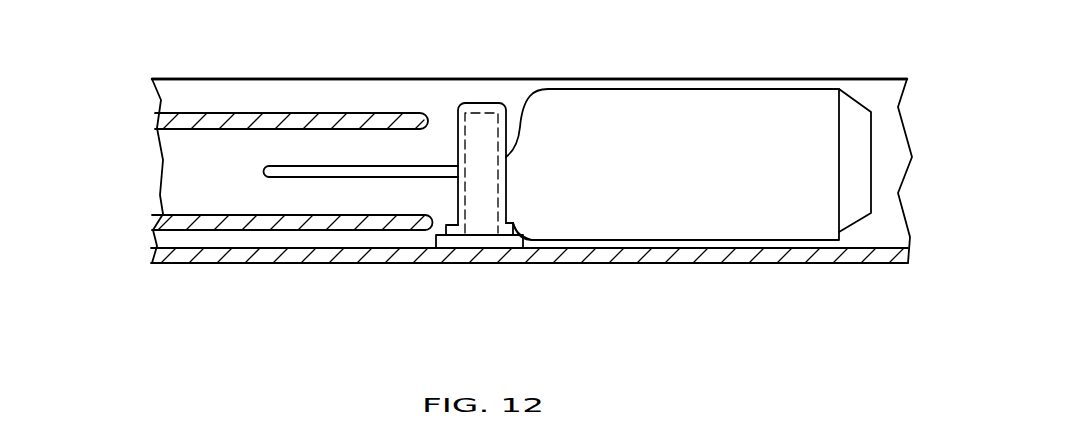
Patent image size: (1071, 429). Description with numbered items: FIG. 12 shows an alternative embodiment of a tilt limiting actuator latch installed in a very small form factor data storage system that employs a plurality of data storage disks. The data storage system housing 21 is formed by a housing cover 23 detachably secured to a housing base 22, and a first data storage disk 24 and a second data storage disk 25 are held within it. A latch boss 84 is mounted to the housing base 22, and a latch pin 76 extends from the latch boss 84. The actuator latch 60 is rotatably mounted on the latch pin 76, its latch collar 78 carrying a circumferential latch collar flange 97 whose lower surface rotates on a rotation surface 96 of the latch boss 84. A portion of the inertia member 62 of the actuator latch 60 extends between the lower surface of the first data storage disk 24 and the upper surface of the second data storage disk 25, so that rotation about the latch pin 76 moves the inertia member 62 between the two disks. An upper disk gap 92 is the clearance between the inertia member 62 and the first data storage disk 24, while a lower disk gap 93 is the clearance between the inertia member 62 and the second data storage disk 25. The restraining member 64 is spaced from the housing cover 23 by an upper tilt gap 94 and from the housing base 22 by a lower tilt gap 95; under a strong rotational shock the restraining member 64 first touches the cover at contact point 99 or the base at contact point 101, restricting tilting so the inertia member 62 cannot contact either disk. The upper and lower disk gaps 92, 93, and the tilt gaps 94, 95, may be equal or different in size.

The data storage system housing 21 is at (138, 116).
The housing base 22 is at (308, 253).
The housing cover 23 is at (338, 83).
The first data storage disk 24 is at (212, 125).
The second data storage disk 25 is at (183, 218).
The actuator latch 60 is at (580, 88).
The inertia member 62 is at (404, 162).
The restraining member 64 is at (666, 167).
The latch pin 76 is at (472, 208).
The latch collar 78 is at (485, 102).
The latch boss 84 is at (447, 246).
The upper disk gap 92 is at (342, 129).
The lower disk gap 93 is at (342, 177).
The upper tilt gap 94 is at (663, 108).
The lower tilt gap 95 is at (586, 273).
The rotation surface 96 is at (521, 225).
The latch collar flange 97 is at (509, 212).
The contact point 99 is at (838, 76).
The contact point 101 is at (828, 253).